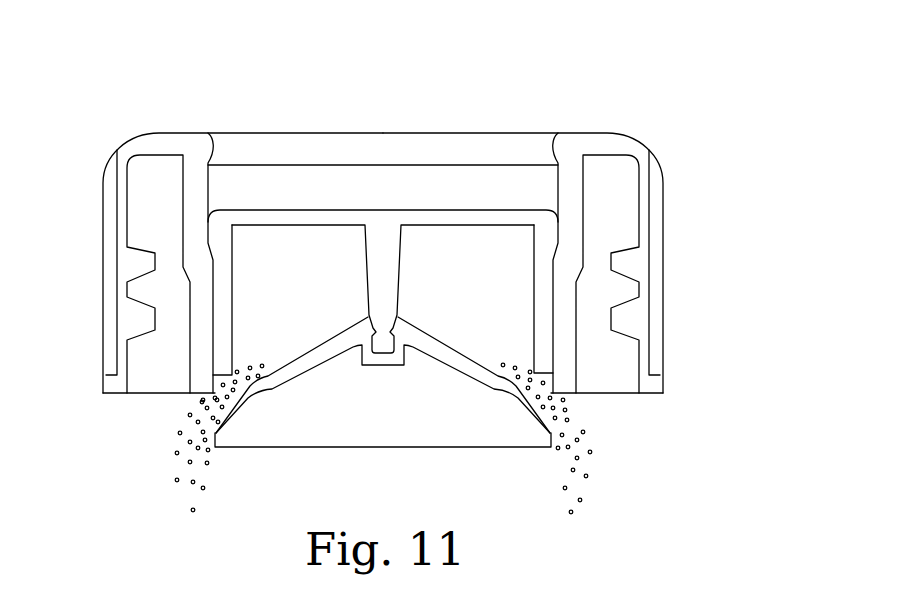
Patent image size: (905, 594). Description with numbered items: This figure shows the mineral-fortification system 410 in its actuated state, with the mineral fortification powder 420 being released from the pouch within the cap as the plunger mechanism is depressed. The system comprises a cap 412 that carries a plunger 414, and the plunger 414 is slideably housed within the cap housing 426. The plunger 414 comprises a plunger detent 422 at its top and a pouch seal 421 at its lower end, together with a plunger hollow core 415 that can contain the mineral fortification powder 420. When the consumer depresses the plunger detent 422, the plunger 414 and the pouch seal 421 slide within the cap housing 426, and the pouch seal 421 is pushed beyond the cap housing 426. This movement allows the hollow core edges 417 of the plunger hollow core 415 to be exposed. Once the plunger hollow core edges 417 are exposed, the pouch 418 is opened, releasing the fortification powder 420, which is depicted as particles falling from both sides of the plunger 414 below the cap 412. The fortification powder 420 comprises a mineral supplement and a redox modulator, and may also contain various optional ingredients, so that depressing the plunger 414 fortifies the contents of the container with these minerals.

The mineral-fortification system 410 is at (415, 268).
The cap 412 is at (665, 200).
The plunger 414 is at (304, 180).
The plunger hollow core 415 is at (262, 277).
The hollow core edges 417 is at (164, 416).
The pouch 418 is at (467, 300).
The mineral fortification powder 420 is at (577, 415).
The pouch seal 421 is at (513, 390).
The plunger detent 422 is at (430, 210).
The cap housing 426 is at (568, 168).